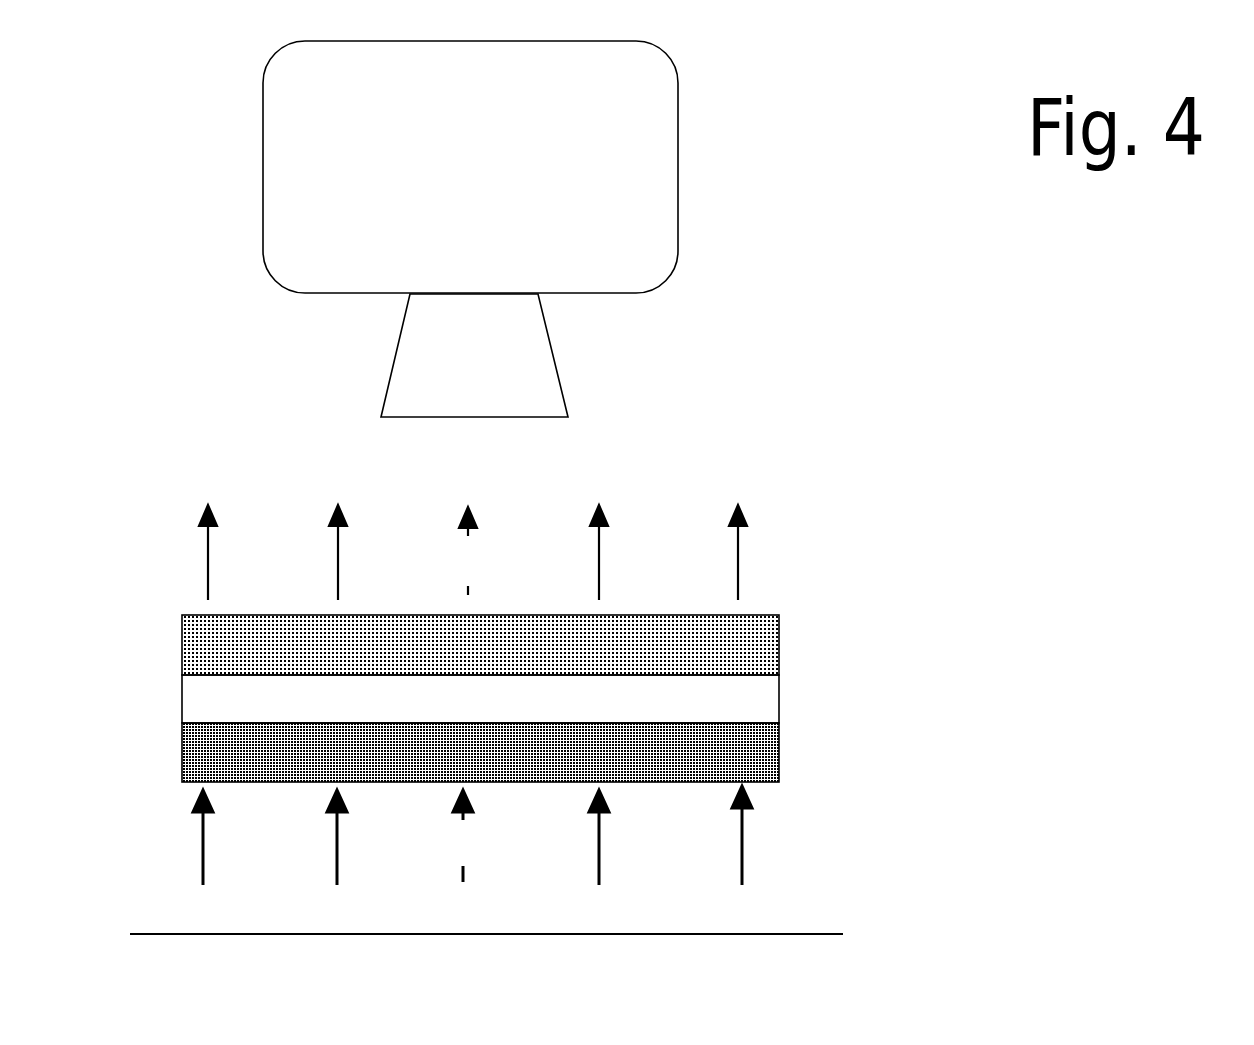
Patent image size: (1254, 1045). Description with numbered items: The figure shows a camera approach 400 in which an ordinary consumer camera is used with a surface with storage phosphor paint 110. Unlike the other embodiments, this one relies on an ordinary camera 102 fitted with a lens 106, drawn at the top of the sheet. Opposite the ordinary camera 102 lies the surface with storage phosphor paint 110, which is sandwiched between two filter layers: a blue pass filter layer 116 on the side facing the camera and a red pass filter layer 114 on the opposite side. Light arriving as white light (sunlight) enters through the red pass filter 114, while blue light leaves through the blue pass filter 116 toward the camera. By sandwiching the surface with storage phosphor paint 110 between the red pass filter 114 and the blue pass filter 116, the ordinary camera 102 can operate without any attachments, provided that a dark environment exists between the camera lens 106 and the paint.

The ordinary camera 102 is at (702, 185).
The lens 106 is at (398, 355).
The surface with storage phosphor paint 110 is at (797, 692).
The red pass filter layer 114 is at (760, 790).
The blue pass filter layer 116 is at (758, 600).
The camera approach 400 is at (1022, 337).